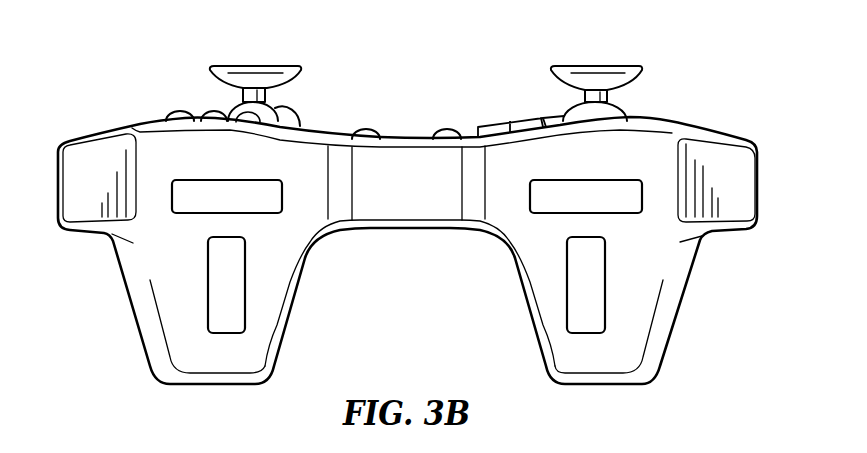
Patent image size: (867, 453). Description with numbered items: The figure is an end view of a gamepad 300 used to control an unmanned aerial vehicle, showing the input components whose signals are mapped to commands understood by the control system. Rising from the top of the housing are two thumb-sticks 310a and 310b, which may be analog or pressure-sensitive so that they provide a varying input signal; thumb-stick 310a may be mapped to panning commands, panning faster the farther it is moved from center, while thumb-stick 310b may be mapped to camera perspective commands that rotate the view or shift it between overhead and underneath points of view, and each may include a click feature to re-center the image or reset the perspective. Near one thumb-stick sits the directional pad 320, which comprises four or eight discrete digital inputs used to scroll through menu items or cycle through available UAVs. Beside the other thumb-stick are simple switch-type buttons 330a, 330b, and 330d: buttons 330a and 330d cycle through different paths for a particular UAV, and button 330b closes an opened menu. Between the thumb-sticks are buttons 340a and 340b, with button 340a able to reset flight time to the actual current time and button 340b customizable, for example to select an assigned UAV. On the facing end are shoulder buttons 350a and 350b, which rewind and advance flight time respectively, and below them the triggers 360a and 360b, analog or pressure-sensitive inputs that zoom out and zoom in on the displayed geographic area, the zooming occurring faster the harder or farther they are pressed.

The gamepad 300 is at (693, 125).
The thumb-stick 310a is at (597, 64).
The thumb-stick 310b is at (252, 64).
The directional pad 320 is at (518, 117).
The button 330a is at (217, 110).
The button 330b is at (170, 113).
The button 330d is at (288, 108).
The button 340a is at (440, 129).
The button 340b is at (368, 130).
The shoulder button 350a is at (607, 214).
The shoulder button 350b is at (203, 214).
The trigger 360a is at (587, 334).
The trigger 360b is at (225, 334).